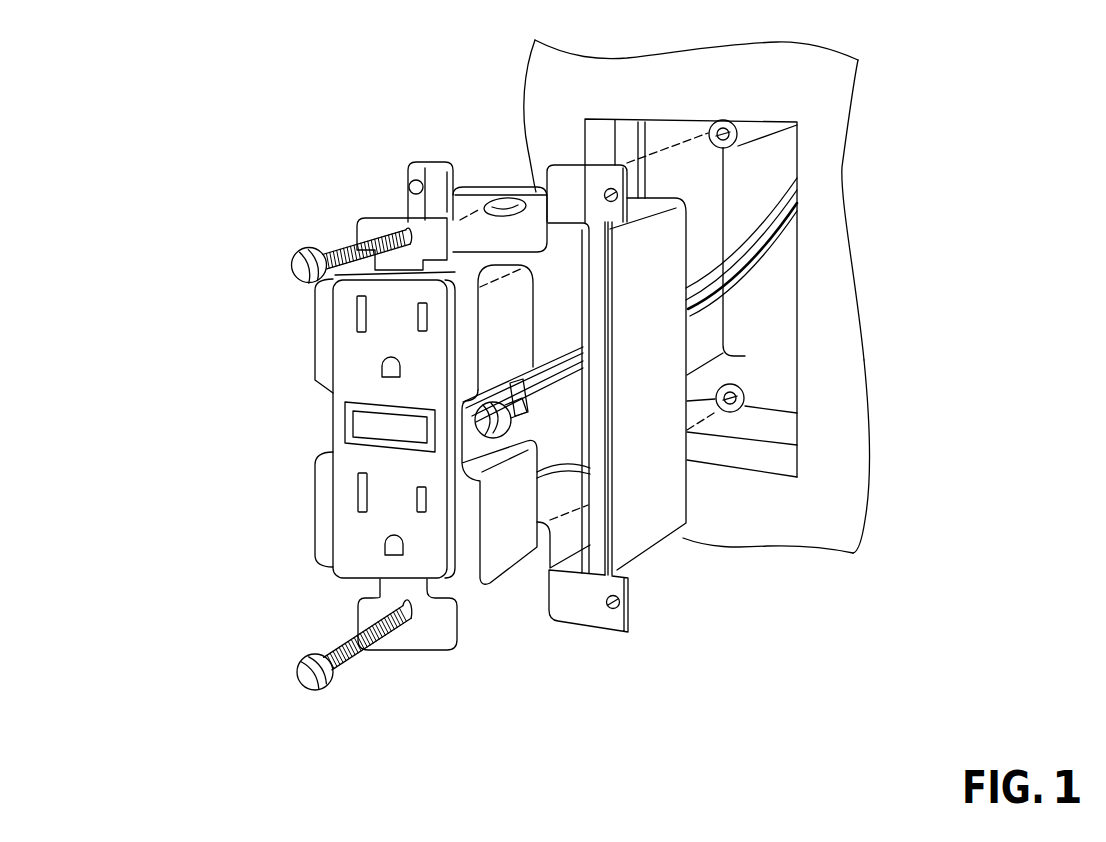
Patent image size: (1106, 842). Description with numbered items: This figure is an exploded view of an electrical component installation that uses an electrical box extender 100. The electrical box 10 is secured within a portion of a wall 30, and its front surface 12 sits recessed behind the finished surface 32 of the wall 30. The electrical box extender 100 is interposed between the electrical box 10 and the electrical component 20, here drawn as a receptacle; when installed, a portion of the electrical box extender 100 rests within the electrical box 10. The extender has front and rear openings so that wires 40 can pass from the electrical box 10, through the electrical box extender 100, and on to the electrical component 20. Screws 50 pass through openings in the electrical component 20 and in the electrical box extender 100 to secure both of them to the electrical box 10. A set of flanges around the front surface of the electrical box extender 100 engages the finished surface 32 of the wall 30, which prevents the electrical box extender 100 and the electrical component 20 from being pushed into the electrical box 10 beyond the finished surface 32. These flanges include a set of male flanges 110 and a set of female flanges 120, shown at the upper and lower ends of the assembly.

The electrical box 10 is at (767, 383).
The front surface 12 is at (787, 433).
The electrical component 20 is at (307, 433).
The wall 30 is at (819, 194).
The finished surface 32 is at (827, 508).
The wires 40 is at (765, 247).
The screws 50 is at (287, 268).
The electrical box extender 100 is at (641, 560).
The male flanges 110 is at (410, 159).
The female flanges 120 is at (608, 647).